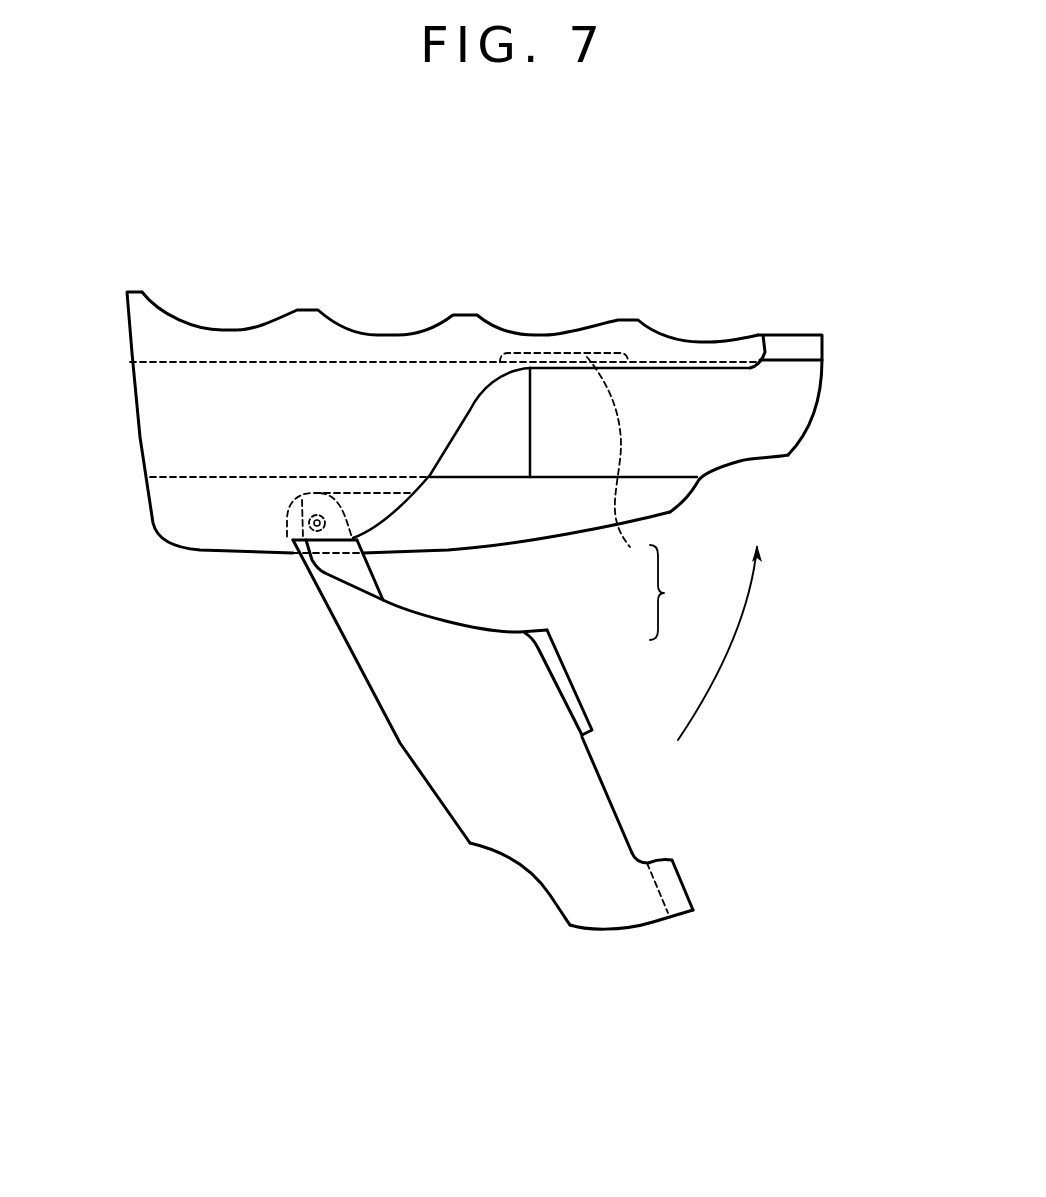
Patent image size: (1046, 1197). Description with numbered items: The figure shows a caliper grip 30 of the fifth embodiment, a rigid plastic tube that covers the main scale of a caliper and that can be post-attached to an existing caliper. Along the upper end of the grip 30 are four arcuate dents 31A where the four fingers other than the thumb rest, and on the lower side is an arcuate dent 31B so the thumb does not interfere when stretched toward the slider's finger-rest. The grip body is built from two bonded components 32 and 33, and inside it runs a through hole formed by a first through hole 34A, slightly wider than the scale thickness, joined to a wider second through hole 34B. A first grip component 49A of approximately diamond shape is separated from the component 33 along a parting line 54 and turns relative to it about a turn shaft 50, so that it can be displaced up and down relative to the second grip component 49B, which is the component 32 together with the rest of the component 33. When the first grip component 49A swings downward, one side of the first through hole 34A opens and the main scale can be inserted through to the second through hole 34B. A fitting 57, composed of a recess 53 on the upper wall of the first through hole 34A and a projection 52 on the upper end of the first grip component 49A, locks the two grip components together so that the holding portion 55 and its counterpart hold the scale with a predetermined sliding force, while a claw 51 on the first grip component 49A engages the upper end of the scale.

The grip 30 is at (820, 280).
The arcuate dents 31A is at (233, 328).
The arcuate dent 31B is at (740, 462).
The component 32 is at (800, 385).
The component 33 is at (242, 535).
The first through hole 34A is at (573, 450).
The second through hole 34B is at (482, 458).
The first grip component 49A is at (572, 873).
The second grip component 49B is at (660, 403).
The turn shaft 50 is at (325, 538).
The claw 51 is at (673, 885).
The projection 52 is at (563, 682).
The recess 53 is at (616, 470).
The parting line 54 is at (455, 433).
The second holding portion 55 is at (723, 423).
The fitting 57 is at (675, 592).